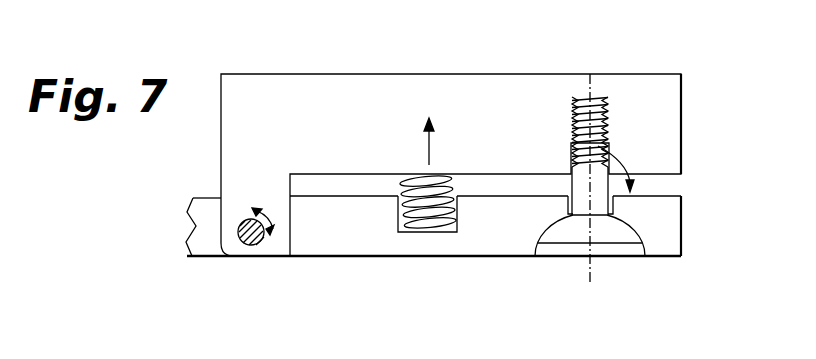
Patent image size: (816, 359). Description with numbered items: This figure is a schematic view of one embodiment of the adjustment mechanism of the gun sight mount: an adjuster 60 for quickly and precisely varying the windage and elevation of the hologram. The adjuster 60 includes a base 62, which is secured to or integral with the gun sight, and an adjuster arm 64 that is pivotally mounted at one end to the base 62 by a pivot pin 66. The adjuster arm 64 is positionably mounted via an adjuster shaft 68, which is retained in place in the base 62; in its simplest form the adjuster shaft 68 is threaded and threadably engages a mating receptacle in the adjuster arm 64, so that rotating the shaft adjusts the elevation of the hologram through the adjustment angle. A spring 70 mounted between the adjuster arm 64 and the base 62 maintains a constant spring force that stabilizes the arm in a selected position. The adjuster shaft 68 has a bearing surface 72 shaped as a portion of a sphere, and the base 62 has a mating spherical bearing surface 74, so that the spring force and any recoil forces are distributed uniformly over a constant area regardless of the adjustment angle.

The adjuster 60 is at (501, 54).
The base 62 is at (663, 245).
The adjuster arm 64 is at (281, 82).
The pivot pin 66 is at (250, 244).
The adjuster shaft 68 is at (606, 125).
The spring 70 is at (437, 230).
The bearing surface 72 is at (620, 248).
The bearing surface 74 is at (616, 250).